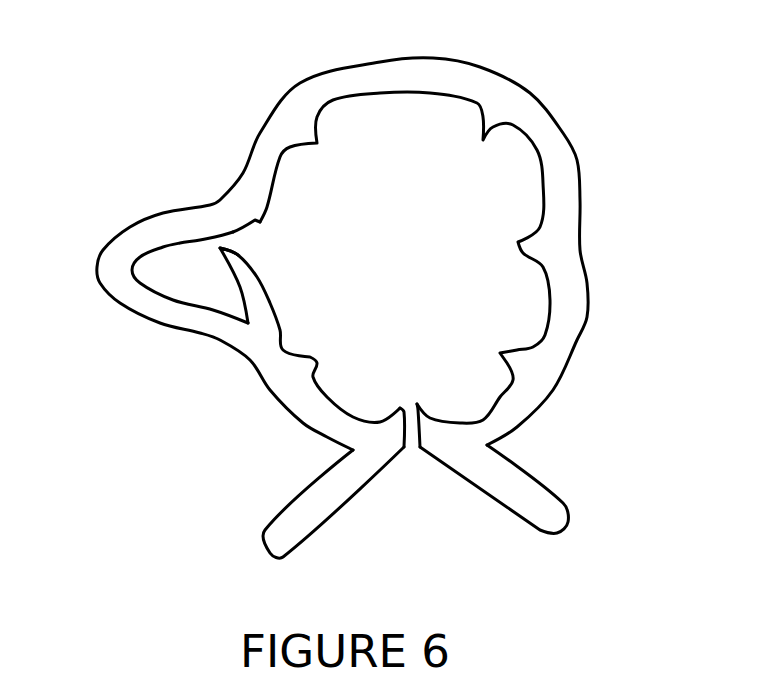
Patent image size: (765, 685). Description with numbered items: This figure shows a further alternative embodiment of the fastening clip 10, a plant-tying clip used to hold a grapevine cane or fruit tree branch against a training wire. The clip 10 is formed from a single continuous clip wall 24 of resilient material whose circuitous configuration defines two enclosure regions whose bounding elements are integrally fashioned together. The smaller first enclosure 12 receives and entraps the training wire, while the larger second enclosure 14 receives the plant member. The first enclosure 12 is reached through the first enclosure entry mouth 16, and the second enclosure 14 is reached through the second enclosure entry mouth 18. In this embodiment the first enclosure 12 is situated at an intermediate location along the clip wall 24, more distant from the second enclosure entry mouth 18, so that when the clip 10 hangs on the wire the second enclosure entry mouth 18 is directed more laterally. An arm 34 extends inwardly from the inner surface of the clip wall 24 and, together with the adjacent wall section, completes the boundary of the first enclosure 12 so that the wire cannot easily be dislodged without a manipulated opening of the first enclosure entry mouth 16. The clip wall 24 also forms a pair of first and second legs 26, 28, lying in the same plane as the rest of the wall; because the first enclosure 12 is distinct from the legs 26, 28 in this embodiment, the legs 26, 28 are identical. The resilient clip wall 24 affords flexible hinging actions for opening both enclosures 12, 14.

The fastening clip 10 is at (344, 287).
The first enclosure 12 is at (193, 277).
The second enclosure 14 is at (446, 221).
The first enclosure entry mouth 16 is at (261, 236).
The second enclosure entry mouth 18 is at (412, 451).
The clip wall 24 is at (467, 83).
The first leg 26 is at (293, 523).
The second leg 28 is at (533, 490).
The arm 34 is at (253, 285).